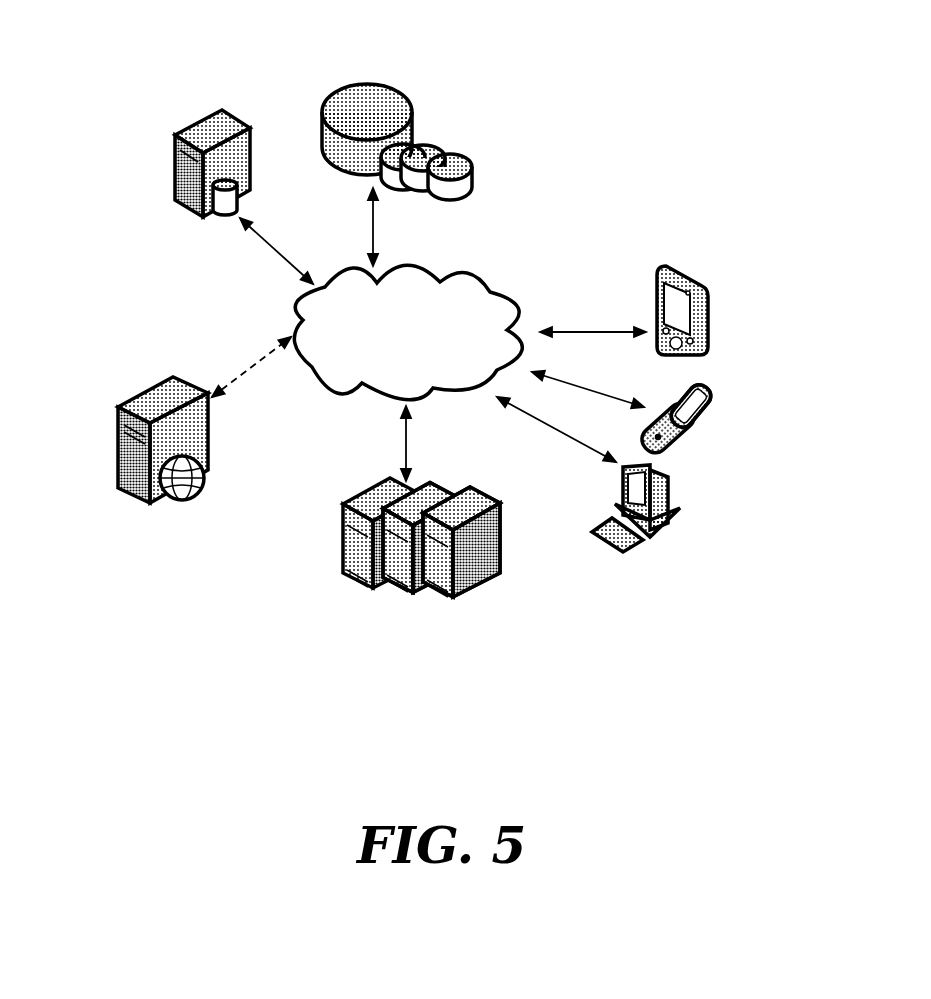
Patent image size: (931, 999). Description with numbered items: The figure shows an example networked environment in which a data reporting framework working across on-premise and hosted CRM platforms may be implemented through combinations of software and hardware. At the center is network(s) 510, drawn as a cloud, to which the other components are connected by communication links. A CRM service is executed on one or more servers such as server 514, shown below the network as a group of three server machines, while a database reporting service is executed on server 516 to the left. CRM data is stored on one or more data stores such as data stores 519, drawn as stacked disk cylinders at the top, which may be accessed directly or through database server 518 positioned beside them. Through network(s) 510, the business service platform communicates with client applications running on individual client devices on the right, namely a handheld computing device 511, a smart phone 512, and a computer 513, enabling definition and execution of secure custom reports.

The network(s) 510 is at (410, 257).
The handheld computing device 511 is at (719, 270).
The smart phone 512 is at (710, 385).
The computer 513 is at (689, 476).
The server 514 is at (368, 483).
The server 516 is at (142, 388).
The database server 518 is at (216, 225).
The data stores 519 is at (382, 63).